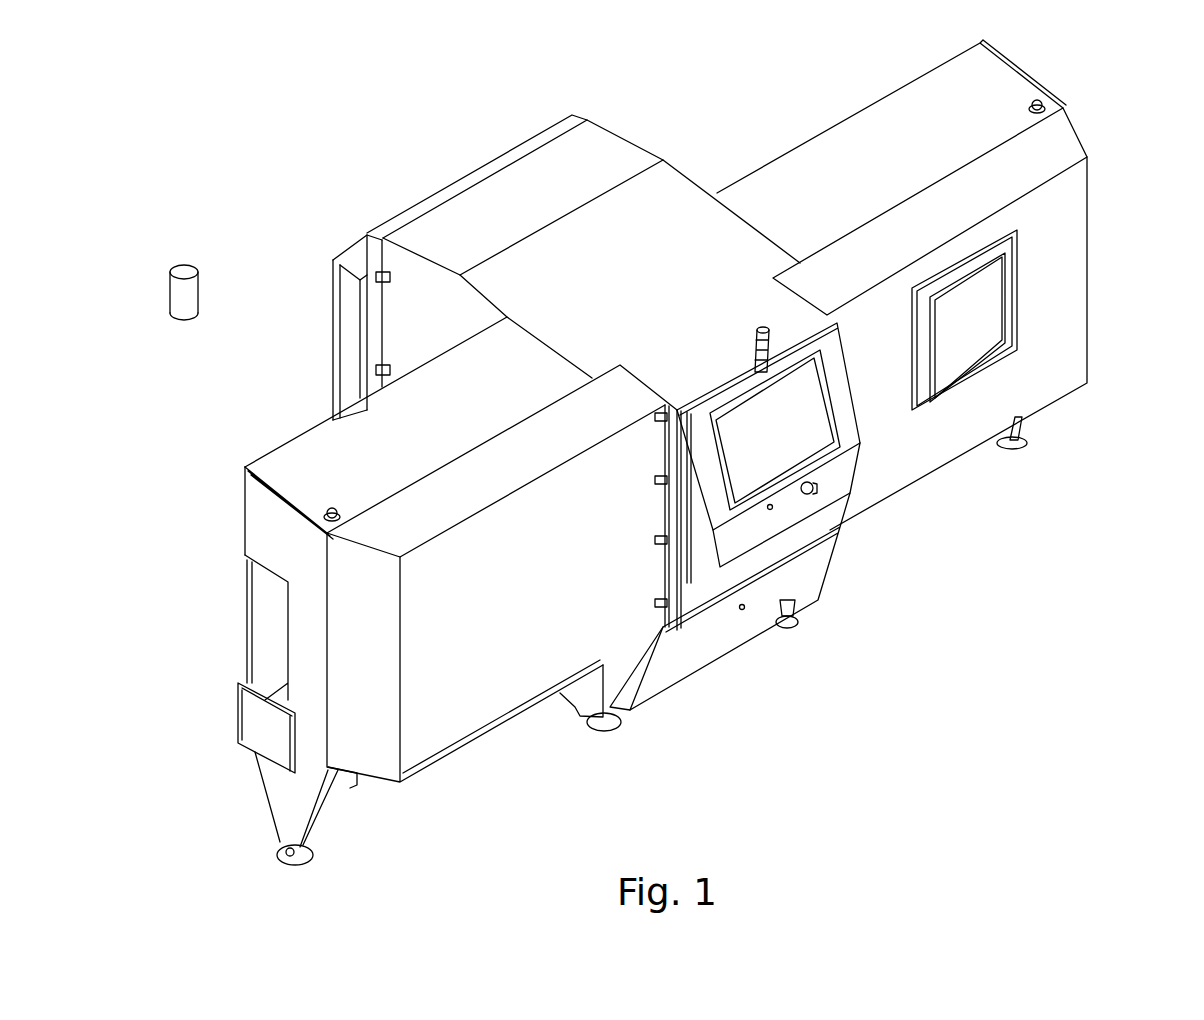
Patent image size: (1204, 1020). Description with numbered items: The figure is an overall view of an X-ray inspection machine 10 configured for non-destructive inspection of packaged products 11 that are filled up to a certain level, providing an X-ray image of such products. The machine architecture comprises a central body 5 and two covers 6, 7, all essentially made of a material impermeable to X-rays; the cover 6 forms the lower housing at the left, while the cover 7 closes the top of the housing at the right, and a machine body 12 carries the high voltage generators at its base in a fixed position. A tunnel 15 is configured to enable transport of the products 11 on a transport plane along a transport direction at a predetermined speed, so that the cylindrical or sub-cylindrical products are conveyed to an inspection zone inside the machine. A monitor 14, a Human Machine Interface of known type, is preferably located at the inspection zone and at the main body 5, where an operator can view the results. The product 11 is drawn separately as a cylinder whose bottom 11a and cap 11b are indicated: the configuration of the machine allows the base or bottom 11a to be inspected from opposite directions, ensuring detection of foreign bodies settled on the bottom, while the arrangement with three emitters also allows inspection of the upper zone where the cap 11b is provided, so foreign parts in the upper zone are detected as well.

The central body 5 is at (502, 183).
The cover 6 is at (320, 445).
The cover 7 is at (1005, 87).
The X-ray inspection machine 10 is at (713, 120).
The packaged product 11 is at (198, 295).
The bottom of the product 11a is at (183, 320).
The cap 11b is at (186, 265).
The machine body 12 is at (1072, 262).
The monitor 14 is at (828, 438).
The tunnel 15 is at (267, 620).